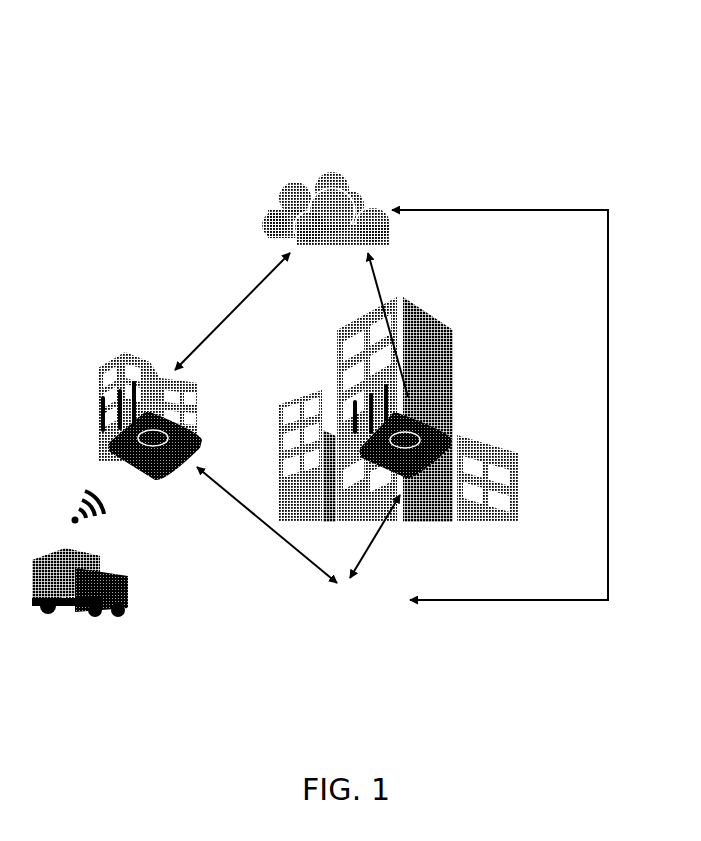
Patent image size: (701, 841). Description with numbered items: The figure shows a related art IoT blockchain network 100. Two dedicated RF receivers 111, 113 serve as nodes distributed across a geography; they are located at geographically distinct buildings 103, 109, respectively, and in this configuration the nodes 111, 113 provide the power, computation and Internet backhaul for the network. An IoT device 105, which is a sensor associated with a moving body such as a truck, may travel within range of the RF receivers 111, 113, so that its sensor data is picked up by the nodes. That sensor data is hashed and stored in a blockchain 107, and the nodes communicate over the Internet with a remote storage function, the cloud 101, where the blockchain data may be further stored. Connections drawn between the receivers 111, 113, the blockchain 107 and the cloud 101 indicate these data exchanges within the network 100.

The IoT blockchain network 100 is at (289, 28).
The cloud 101 is at (390, 150).
The building 103 is at (139, 335).
The IoT device 105 is at (98, 629).
The blockchain 107 is at (353, 628).
The building 109 is at (445, 318).
The RF receiver 111 is at (93, 446).
The RF receiver 113 is at (462, 426).